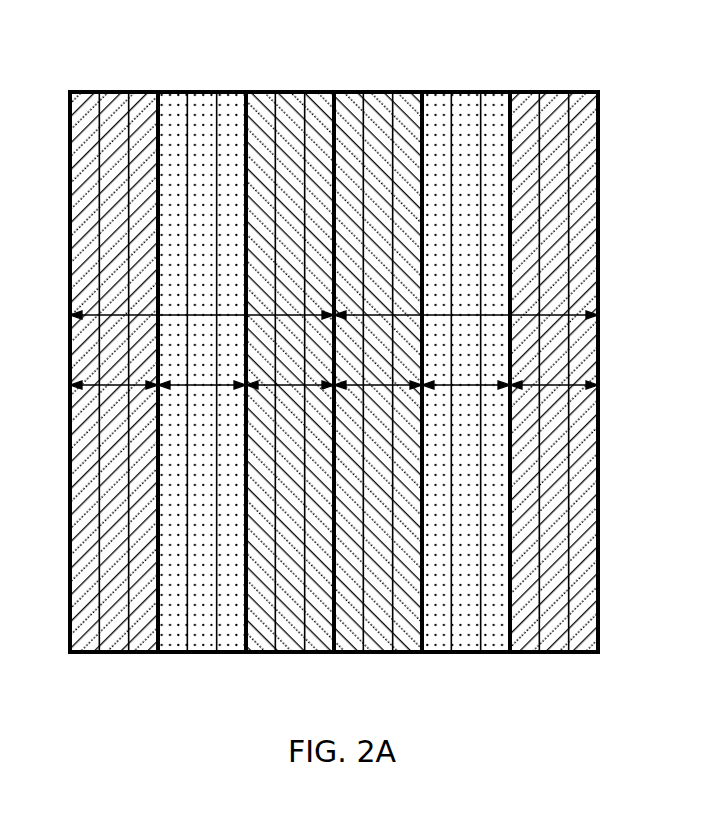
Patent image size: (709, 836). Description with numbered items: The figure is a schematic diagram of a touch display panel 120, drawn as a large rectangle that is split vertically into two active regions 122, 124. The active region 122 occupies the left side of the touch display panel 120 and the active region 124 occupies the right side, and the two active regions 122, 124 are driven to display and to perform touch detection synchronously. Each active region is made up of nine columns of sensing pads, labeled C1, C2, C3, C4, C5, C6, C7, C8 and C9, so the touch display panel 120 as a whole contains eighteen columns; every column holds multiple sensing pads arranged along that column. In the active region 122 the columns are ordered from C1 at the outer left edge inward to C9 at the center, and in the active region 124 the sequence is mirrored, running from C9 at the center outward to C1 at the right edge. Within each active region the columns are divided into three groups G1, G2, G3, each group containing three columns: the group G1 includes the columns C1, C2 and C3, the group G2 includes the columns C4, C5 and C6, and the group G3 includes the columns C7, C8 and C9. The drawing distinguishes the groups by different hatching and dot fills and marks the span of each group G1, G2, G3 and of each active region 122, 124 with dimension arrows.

The column of sensing pads C1 is at (80, 99).
The column of sensing pads C2 is at (110, 99).
The column of sensing pads C3 is at (143, 99).
The column of sensing pads C4 is at (170, 99).
The column of sensing pads C5 is at (203, 99).
The column of sensing pads C6 is at (230, 99).
The column of sensing pads C7 is at (258, 99).
The column of sensing pads C8 is at (285, 99).
The column of sensing pads C9 is at (310, 99).
The group G1 is at (334, 372).
The group G2 is at (334, 372).
The group G3 is at (334, 372).
The touch display panel 120 is at (601, 222).
The active region 122 is at (202, 316).
The active region 124 is at (466, 316).